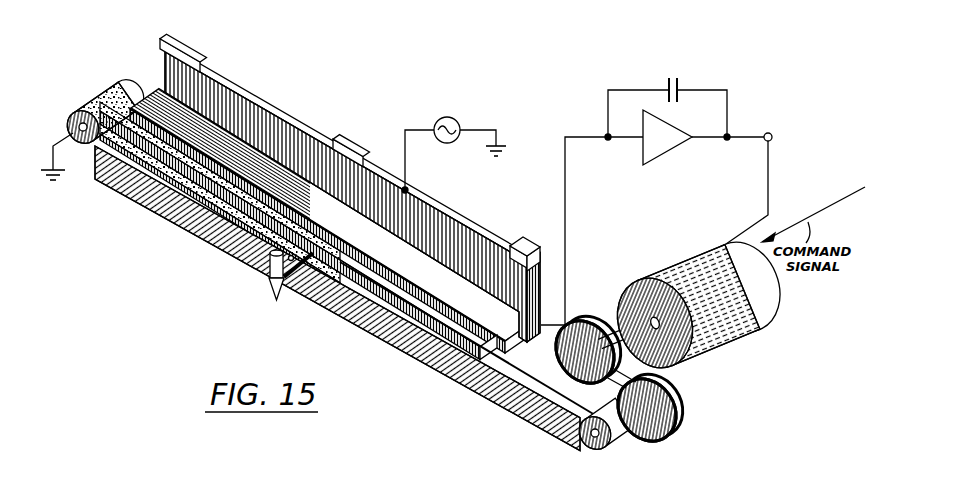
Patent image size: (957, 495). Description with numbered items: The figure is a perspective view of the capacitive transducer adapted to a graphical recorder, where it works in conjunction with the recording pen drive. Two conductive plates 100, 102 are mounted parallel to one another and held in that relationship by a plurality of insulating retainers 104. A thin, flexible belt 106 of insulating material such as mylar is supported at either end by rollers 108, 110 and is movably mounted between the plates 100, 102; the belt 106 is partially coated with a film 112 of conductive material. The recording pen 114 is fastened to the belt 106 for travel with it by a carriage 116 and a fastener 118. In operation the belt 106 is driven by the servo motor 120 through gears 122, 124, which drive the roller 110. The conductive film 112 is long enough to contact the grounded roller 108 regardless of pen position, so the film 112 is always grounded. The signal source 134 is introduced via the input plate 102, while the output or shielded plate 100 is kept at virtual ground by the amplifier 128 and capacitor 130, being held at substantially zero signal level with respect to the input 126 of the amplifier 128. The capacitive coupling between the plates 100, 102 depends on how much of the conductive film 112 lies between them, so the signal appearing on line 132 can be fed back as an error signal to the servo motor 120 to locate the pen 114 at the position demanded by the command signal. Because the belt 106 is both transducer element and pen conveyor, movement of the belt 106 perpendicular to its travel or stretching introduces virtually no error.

The conductive plate 100 is at (466, 342).
The conductive plate 102 is at (421, 228).
The insulating retainers 104 is at (200, 56).
The belt 106 is at (394, 318).
The roller 108 is at (80, 112).
The roller 110 is at (585, 446).
The conductive film 112 is at (190, 190).
The recording pen 114 is at (268, 258).
The carriage 116 is at (286, 285).
The fastener 118 is at (304, 270).
The servo motor 120 is at (718, 347).
The gear 122 is at (574, 306).
The gear 124 is at (674, 424).
The input of amplifier 126 is at (568, 216).
The amplifier 128 is at (664, 152).
The capacitor 130 is at (670, 86).
The line 132 is at (768, 131).
The signal source 134 is at (455, 106).